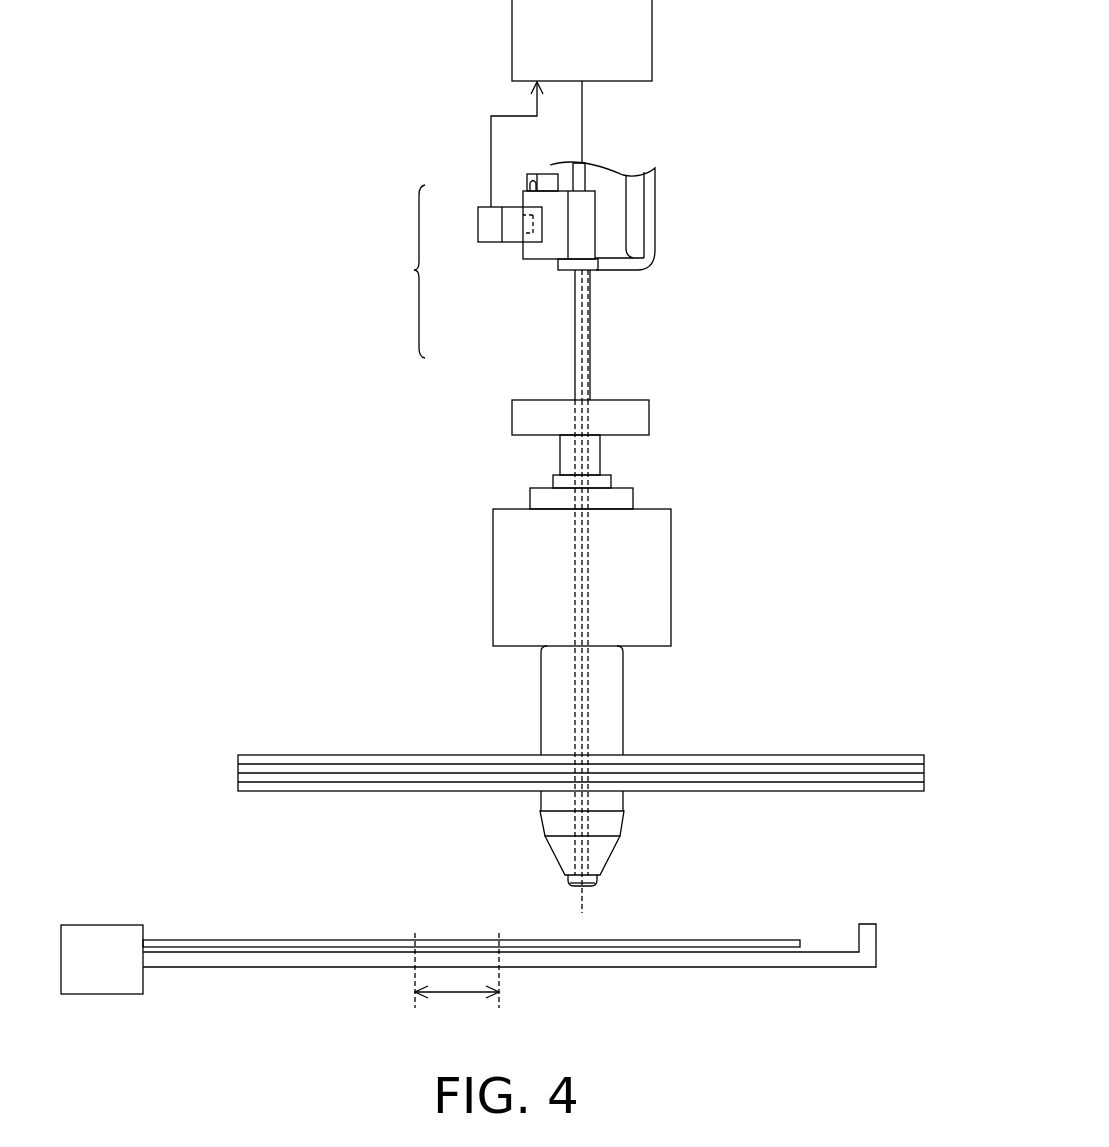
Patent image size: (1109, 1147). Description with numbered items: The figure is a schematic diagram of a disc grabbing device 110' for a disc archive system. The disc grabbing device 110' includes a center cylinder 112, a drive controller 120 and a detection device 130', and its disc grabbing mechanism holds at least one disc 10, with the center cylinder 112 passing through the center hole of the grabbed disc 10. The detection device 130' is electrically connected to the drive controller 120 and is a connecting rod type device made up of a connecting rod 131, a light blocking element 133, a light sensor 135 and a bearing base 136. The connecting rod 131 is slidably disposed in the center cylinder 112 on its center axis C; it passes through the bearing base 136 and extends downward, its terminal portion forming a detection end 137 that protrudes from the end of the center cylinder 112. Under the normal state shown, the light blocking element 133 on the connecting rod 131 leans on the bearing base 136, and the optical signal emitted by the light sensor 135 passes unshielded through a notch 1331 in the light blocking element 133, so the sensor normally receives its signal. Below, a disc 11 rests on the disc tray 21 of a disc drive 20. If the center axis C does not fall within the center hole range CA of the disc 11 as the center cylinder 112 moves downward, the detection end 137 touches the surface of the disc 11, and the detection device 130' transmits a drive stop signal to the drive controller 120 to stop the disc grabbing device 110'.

The drive controller 120 is at (652, 33).
The detection device 130' is at (392, 271).
The light blocking element 133 is at (550, 248).
The notch 1331 is at (526, 222).
The light sensor 135 is at (508, 242).
The bearing base 136 is at (657, 222).
The connecting rod 131 is at (590, 333).
The detection end 137 is at (597, 883).
The disc grabbing device 110' is at (641, 656).
The center cylinder 112 is at (623, 703).
The disc 10 is at (883, 755).
The center axis C is at (582, 905).
The disc drive 20 is at (101, 994).
The disc tray 21 is at (290, 967).
The disc 11 is at (735, 940).
The center hole range CA is at (457, 980).